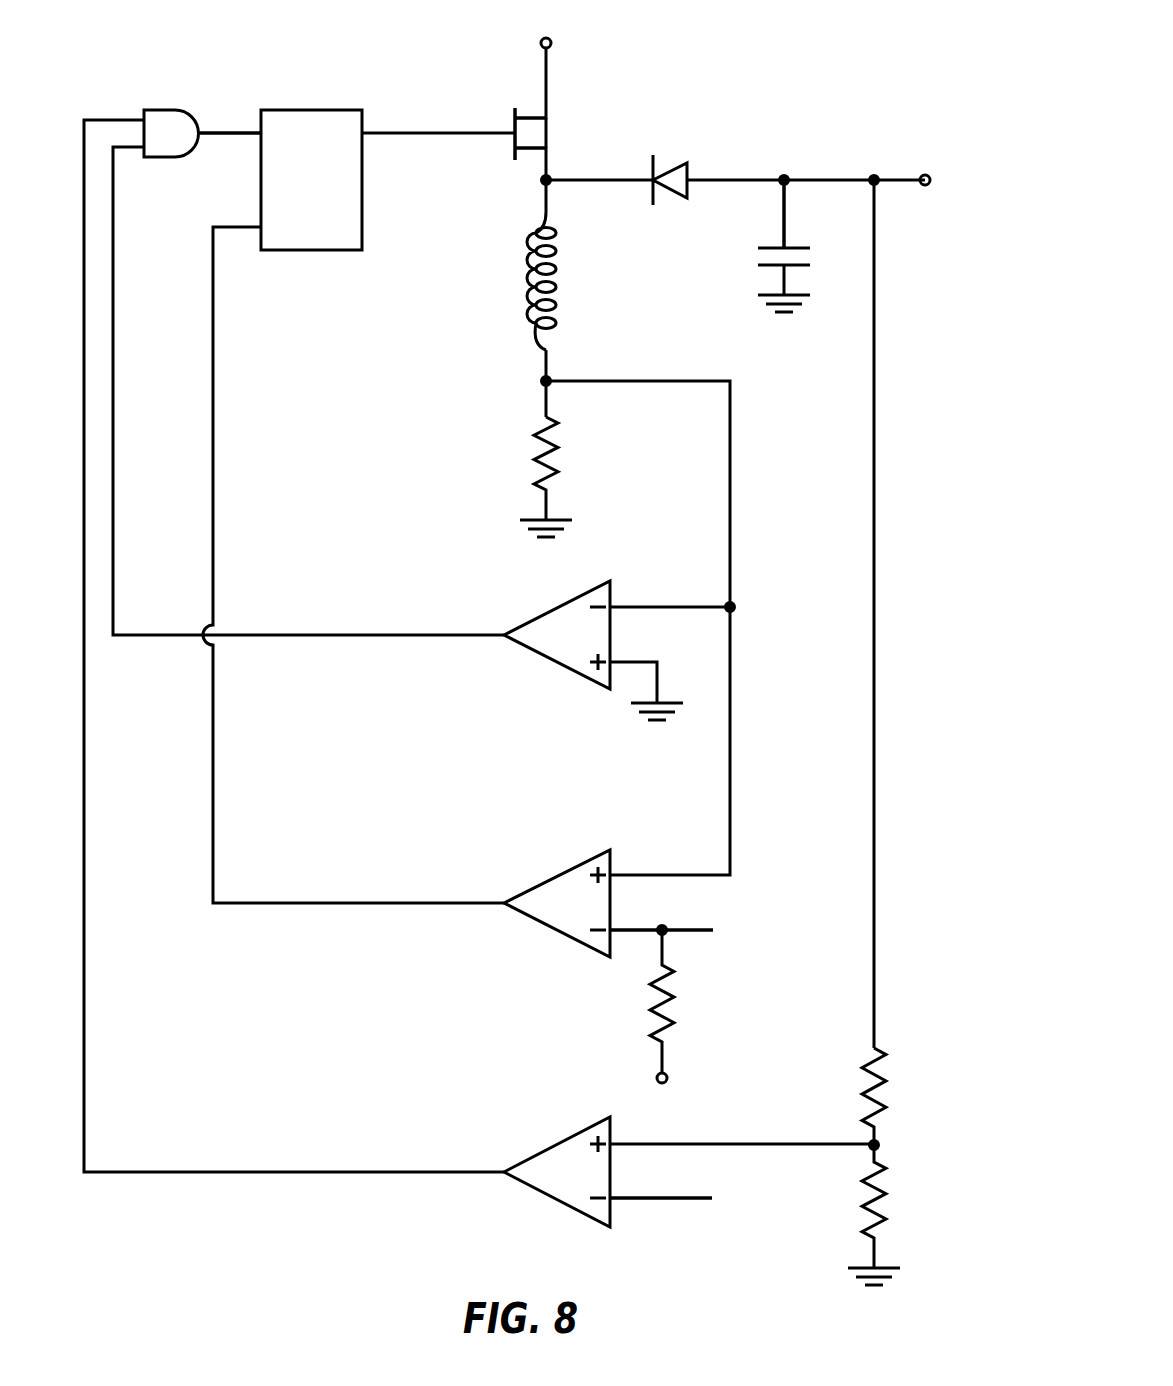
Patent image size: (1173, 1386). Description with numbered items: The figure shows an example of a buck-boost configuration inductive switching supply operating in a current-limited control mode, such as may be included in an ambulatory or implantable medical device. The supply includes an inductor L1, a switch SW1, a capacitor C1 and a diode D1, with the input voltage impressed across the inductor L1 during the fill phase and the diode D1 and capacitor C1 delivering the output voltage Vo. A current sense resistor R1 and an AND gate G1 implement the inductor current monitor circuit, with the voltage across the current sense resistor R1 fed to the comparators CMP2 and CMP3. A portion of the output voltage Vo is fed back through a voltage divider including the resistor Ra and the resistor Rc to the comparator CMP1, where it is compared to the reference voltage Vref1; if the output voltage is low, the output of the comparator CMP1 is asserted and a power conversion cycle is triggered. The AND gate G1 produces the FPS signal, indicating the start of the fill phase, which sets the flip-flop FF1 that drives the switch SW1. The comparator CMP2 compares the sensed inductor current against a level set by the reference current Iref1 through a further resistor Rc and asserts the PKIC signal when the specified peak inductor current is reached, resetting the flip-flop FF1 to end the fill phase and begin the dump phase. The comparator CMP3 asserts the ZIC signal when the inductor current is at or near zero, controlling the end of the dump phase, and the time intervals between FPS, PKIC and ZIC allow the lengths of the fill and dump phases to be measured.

The AND gate G1 is at (202, 133).
The flip-flop FF1 is at (311, 180).
The switch SW1 is at (556, 134).
The diode D1 is at (670, 158).
The capacitor C1 is at (802, 246).
The inductor L1 is at (525, 281).
The current sense resistor R1 is at (533, 477).
The comparator CMP3 is at (557, 635).
The comparator CMP2 is at (557, 903).
The comparator CMP1 is at (557, 1172).
The resistor Ra is at (895, 1096).
The resistor Rc is at (789, 1107).
The Fill Phase Start signal FPS is at (230, 121).
The Zero Inductor Current signal ZIC is at (308, 391).
The Peak Inductor Current signal PKIC is at (353, 565).
The output voltage Vo is at (948, 183).
The reference current Iref1 is at (693, 933).
The reference voltage Vref1 is at (694, 1200).